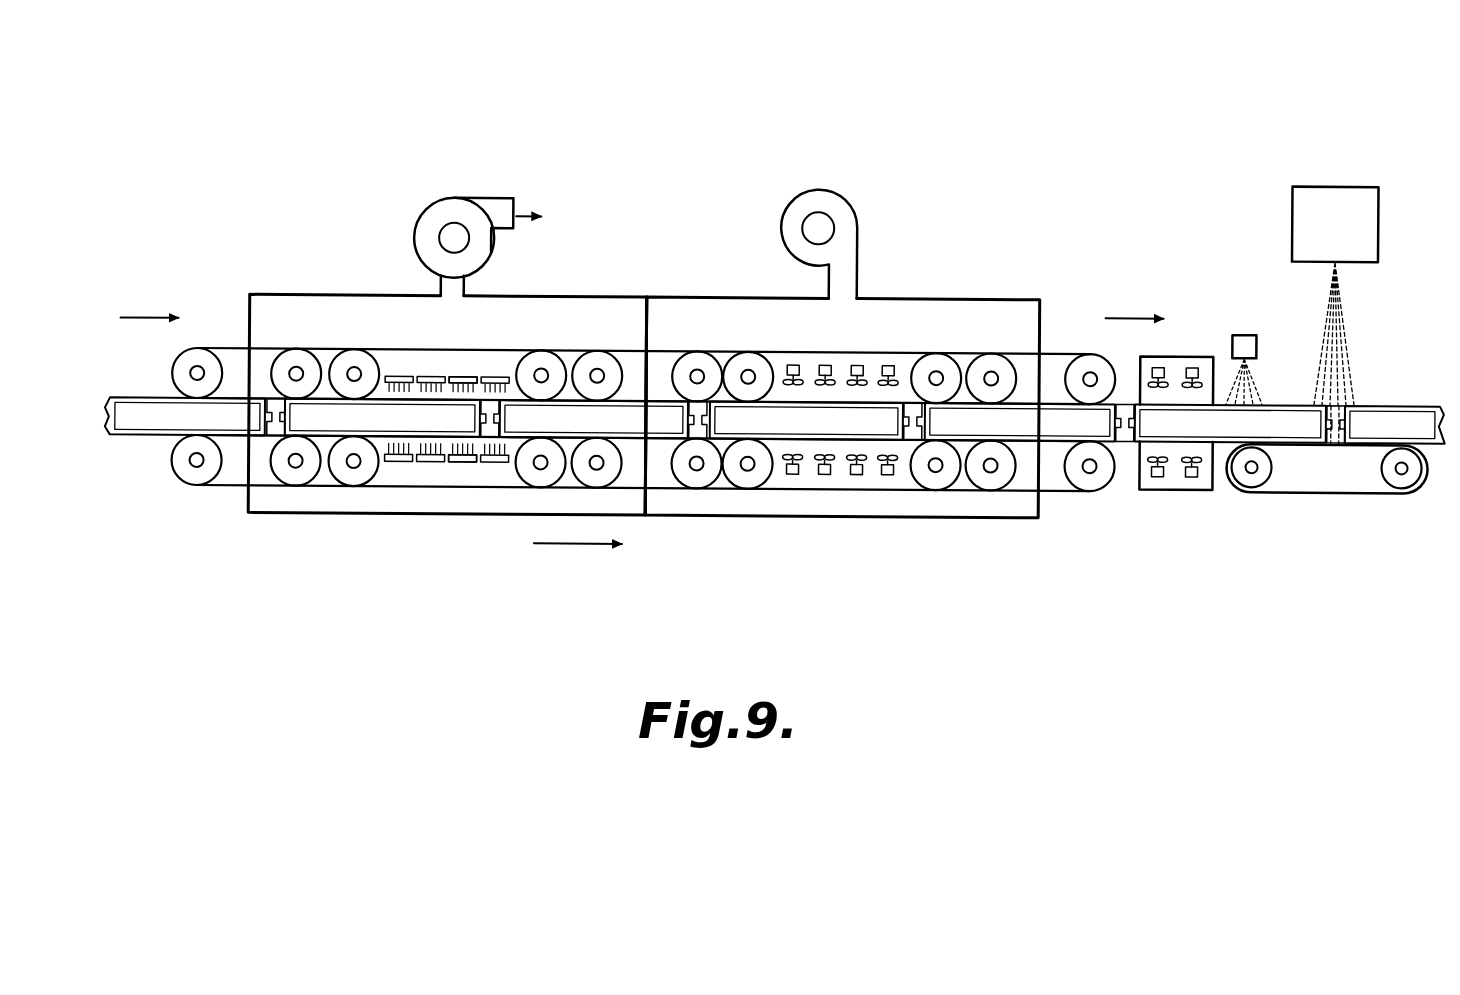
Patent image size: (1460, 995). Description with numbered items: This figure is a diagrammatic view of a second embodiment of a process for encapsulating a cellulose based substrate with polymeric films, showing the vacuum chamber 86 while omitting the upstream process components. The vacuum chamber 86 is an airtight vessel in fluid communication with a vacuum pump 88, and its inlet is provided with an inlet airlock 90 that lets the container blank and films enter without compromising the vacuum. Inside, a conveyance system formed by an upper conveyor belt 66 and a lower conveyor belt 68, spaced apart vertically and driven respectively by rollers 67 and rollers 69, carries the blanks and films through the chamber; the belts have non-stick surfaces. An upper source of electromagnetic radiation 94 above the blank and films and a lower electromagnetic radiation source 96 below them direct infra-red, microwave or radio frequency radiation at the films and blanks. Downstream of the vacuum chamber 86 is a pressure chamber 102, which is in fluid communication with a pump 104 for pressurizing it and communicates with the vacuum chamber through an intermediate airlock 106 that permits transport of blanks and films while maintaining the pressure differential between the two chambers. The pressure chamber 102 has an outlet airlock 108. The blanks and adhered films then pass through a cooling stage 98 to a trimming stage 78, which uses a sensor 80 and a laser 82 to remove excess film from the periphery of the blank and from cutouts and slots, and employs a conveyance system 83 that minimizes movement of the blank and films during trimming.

The trimming stage 78 is at (1251, 172).
The sensor 80 is at (1245, 327).
The camera / vision inspection unit 82 is at (1345, 178).
The conveyance system 83 is at (1343, 486).
The vacuum chamber 86 is at (278, 294).
The vacuum pump 88 is at (443, 206).
The inlet airlock 90 is at (232, 347).
The upper conveyor belt 66 is at (410, 348).
The rollers 67 is at (345, 348).
The lower conveyor belt 68 is at (398, 487).
The rollers 69 is at (340, 477).
The upper source of electromagnetic radiation 94 is at (467, 374).
The lower electromagnetic radiation source 96 is at (462, 462).
The cooling stage 98 is at (1189, 500).
The pressure chamber 102 is at (937, 294).
The pump 104 is at (840, 195).
The intermediate airlock 106 is at (656, 348).
The outlet airlock 108 is at (1052, 346).